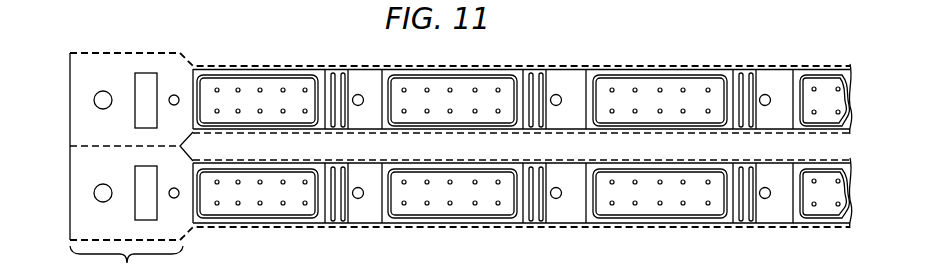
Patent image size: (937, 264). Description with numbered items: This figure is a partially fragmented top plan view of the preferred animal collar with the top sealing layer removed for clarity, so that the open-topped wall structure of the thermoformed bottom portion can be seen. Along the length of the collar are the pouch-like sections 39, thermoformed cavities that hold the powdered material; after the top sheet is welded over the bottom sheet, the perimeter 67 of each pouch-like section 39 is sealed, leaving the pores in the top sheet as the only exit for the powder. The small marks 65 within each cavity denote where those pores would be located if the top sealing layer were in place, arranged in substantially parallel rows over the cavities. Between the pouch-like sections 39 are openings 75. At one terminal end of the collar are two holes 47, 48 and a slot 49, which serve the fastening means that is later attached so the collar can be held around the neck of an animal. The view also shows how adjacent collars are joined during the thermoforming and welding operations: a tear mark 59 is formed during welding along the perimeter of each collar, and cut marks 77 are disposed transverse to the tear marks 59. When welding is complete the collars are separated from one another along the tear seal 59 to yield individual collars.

The pouch-like section 39 is at (250, 89).
The hole 47 is at (93, 100).
The hole 48 is at (174, 95).
The slot 49 is at (140, 92).
The tear mark 59 is at (860, 65).
The pore location 65 is at (283, 88).
The perimeter 67 is at (245, 124).
The opening 75 is at (357, 106).
The cut mark 77 is at (535, 68).